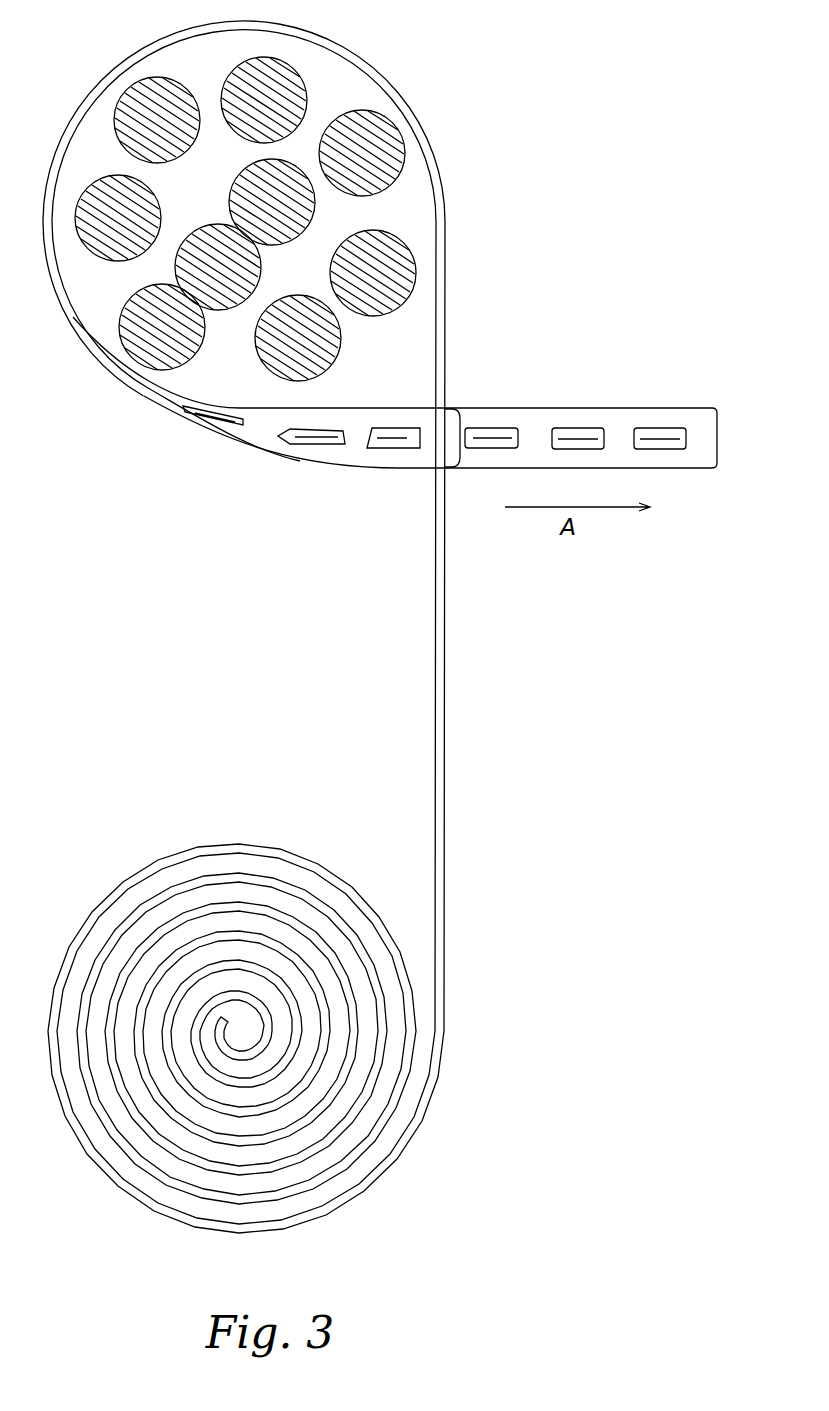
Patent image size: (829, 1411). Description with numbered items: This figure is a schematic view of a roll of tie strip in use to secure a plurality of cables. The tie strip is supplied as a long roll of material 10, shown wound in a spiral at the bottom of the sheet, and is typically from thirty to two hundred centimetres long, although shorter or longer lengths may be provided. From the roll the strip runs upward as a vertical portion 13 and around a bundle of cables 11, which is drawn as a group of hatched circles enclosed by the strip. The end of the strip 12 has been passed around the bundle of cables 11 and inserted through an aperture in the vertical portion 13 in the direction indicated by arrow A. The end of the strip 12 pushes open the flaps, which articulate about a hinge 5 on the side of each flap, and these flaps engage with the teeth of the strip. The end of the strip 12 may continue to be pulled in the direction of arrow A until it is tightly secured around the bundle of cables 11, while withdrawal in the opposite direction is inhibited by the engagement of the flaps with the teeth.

The hinge 5 is at (453, 470).
The roll of material 10 is at (378, 1172).
The bundle of cables 11 is at (367, 145).
The end of the strip 12 is at (717, 450).
The vertical portion 13 is at (442, 370).